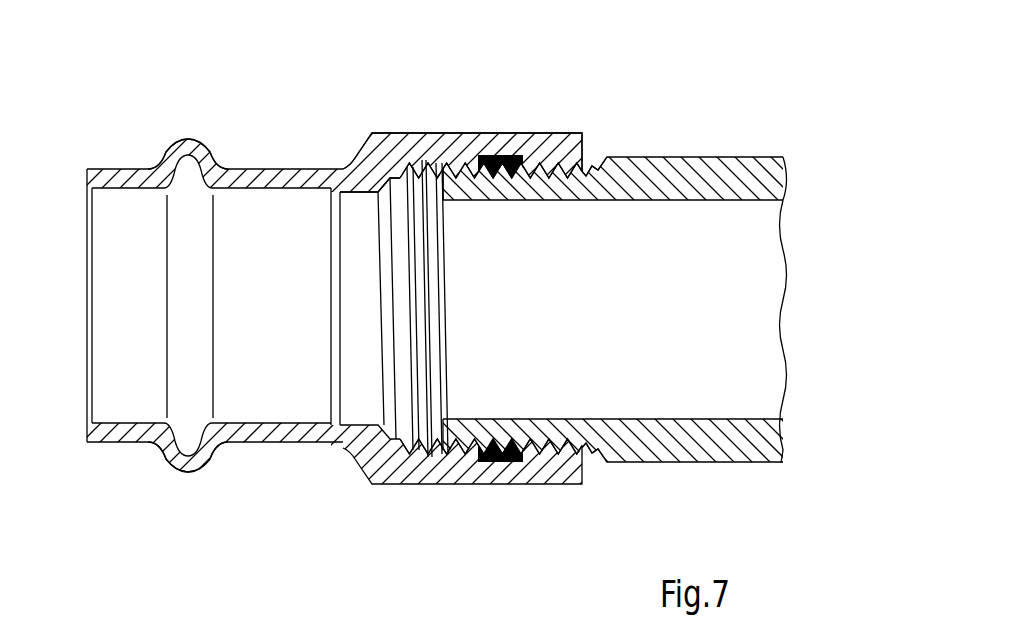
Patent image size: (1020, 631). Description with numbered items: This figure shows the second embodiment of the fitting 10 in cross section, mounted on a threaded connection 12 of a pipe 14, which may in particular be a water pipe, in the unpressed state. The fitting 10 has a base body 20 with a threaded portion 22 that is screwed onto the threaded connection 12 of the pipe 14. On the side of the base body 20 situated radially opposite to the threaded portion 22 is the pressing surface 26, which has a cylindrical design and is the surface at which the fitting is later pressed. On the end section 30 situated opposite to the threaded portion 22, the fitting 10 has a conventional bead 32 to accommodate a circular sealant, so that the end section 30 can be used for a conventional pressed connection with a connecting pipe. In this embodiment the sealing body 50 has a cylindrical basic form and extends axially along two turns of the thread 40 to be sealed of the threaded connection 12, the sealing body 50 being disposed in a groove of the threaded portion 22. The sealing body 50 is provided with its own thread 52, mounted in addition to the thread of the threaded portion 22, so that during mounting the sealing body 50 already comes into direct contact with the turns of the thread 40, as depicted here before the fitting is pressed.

The fitting 10 is at (298, 107).
The threaded connection 12 is at (588, 462).
The pipe 14 is at (747, 448).
The base body 20 is at (387, 152).
The threaded portion 22 is at (557, 163).
The pressing surface 26 is at (443, 132).
The end section 30 is at (120, 143).
The bead 32 is at (185, 146).
The thread 40 is at (543, 453).
The sealing body 50 is at (498, 157).
The thread 52 is at (512, 167).